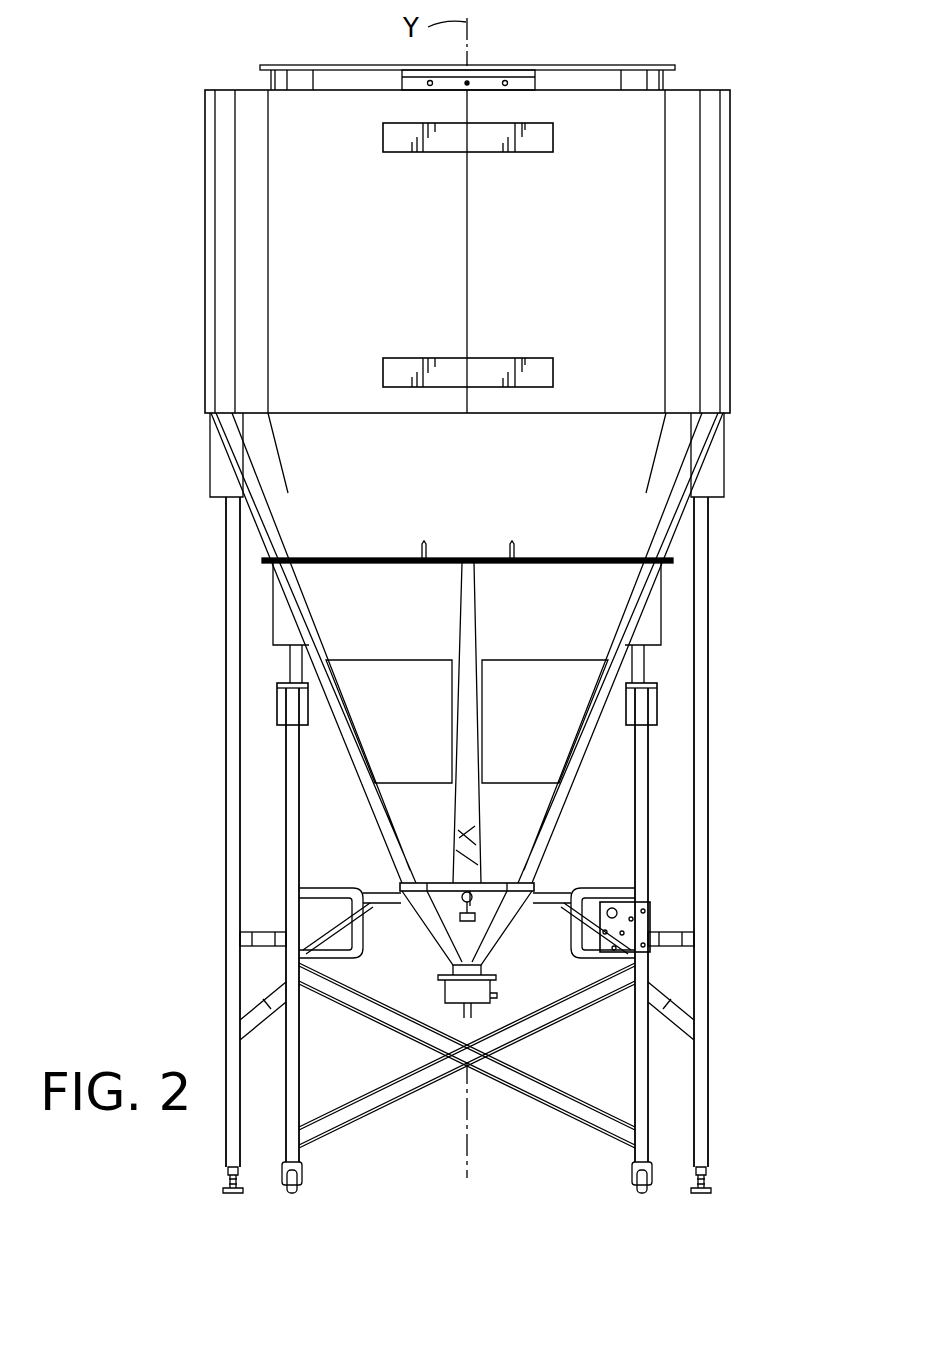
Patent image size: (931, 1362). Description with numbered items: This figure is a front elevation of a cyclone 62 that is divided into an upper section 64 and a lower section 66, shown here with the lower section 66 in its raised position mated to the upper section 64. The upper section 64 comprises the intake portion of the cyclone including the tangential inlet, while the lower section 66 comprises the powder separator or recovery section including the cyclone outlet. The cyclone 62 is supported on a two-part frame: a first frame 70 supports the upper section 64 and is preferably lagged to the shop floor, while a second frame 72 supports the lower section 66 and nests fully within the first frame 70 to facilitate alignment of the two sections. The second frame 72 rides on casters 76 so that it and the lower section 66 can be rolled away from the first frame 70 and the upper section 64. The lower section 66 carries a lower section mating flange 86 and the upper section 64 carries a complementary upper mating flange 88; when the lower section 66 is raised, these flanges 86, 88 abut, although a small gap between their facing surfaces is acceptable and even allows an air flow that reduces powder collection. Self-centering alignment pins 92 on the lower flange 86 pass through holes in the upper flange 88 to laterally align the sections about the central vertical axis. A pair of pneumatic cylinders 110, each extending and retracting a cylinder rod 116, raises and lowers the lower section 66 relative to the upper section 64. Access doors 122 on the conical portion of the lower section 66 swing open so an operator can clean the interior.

The cyclone 62 is at (795, 72).
The cyclone upper section 64 is at (146, 78).
The cyclone lower section 66 is at (146, 1015).
The first frame 70 is at (222, 802).
The second frame 72 is at (303, 1023).
The casters 76 is at (301, 1188).
The lower section mating flange 86 is at (372, 550).
The upper mating flange 88 is at (330, 572).
The self-centering alignment pins 92 is at (426, 553).
The pneumatic cylinders 110 is at (277, 700).
The cylinder rod 116 is at (289, 664).
The access doors 122 is at (406, 682).